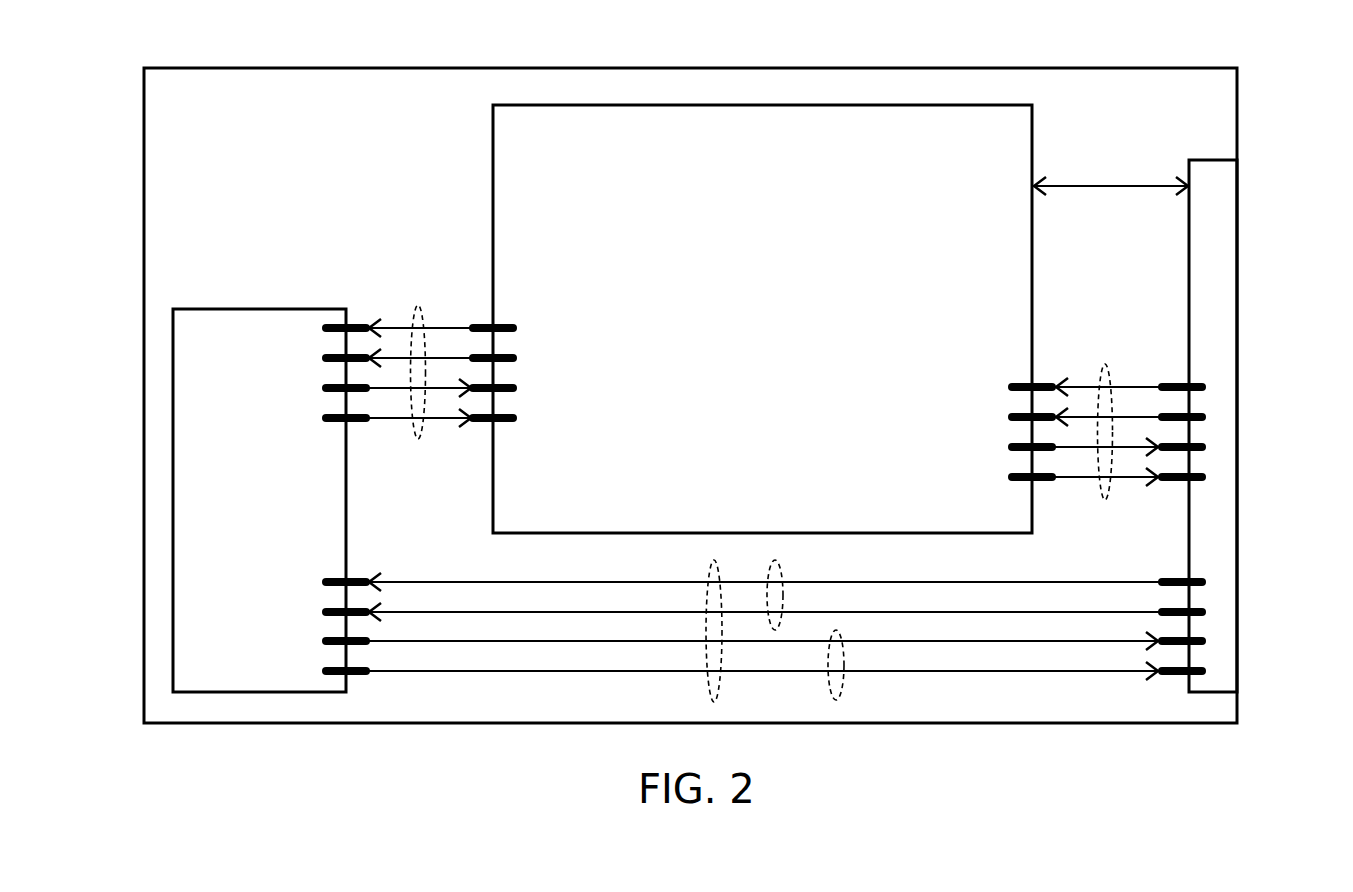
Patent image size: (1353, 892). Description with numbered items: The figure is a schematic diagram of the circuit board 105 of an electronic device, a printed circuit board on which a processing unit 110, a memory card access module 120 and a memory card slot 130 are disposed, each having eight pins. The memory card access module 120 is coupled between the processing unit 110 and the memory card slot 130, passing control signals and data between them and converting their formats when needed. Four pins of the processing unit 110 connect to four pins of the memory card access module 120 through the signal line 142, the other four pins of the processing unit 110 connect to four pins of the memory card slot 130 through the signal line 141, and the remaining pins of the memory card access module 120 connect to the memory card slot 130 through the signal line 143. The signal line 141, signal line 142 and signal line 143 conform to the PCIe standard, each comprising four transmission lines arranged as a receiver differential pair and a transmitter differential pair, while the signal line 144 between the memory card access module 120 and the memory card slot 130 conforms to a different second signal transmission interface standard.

The circuit board 105 is at (142, 98).
The processing unit 110 is at (306, 309).
The memory card access module 120 is at (493, 153).
The memory card slot 130 is at (1197, 160).
The signal line 141 is at (764, 629).
The signal line 142 is at (418, 293).
The signal line 143 is at (1101, 356).
The signal line 144 is at (1102, 175).